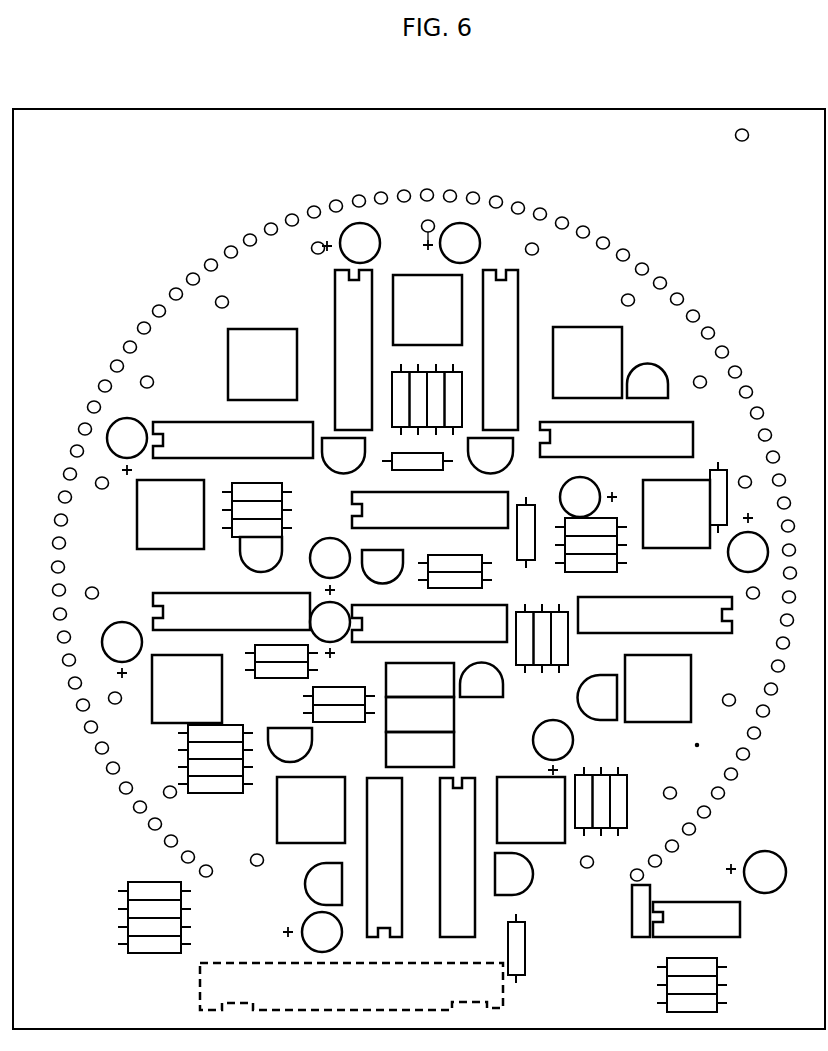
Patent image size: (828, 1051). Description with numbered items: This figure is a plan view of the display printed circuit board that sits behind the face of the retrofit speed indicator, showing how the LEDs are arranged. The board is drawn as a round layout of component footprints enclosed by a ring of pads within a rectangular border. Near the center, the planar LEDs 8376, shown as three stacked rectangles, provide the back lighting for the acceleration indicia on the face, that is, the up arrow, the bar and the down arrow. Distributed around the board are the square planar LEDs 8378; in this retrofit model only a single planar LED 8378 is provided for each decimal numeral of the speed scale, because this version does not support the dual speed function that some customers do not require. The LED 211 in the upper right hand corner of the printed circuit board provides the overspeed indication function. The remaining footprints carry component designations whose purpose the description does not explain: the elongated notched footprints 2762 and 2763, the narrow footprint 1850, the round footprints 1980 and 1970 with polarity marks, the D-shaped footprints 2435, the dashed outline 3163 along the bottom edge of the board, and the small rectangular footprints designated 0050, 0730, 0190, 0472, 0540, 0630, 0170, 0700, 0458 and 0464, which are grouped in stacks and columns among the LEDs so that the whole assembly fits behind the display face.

The overspeed indication LED 211 is at (759, 136).
The planar LED 8378 is at (423, 559).
The planar LEDs 8376 is at (420, 715).
The connector / IC footprint 2762 is at (442, 603).
The connector footprint 2763 is at (696, 919).
The component footprint 1850 is at (641, 911).
The electrolytic capacitor footprint 1980 is at (435, 587).
The capacitor footprint 1970 is at (765, 872).
The transistor footprint 2435 is at (435, 635).
The connector outline (dashed) 3163 is at (351, 986).
The resistor footprint 0050 is at (372, 673).
The resistor footprint 0730 is at (422, 688).
The resistor footprint 0190 is at (422, 670).
The resistor footprint 0472 is at (397, 638).
The resistor footprint 0540 is at (397, 638).
The resistor footprint 0630 is at (356, 673).
The resistor footprint 0170 is at (559, 638).
The resistor footprint 0700 is at (602, 801).
The resistor footprint 0458 is at (154, 944).
The resistor footprint 0464 is at (692, 985).